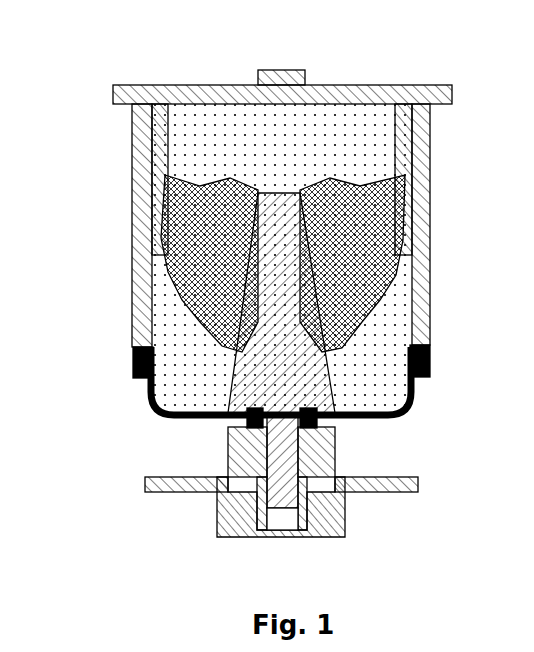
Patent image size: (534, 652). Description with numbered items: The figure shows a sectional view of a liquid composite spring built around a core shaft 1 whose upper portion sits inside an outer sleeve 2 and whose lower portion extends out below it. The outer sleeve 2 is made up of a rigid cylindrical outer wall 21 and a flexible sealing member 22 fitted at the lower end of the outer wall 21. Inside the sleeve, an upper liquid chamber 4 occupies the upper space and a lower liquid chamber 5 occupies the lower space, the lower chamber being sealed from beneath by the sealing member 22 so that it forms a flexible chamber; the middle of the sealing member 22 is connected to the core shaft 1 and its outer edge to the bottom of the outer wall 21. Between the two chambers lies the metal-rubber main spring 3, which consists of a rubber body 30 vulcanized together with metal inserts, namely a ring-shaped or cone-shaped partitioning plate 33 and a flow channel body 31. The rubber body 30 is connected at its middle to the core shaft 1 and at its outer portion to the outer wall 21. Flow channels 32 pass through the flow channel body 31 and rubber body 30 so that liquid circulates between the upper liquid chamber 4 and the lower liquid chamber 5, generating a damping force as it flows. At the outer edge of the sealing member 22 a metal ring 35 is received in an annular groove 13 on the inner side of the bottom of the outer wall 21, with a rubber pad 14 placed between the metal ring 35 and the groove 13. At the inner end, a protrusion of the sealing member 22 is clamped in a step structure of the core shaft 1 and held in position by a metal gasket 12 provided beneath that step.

The core shaft 1 is at (148, 160).
The outer sleeve 2 is at (153, 133).
The metal-rubber main spring 3 is at (187, 260).
The upper liquid chamber 4 is at (317, 113).
The lower liquid chamber 5 is at (388, 378).
The metal gasket 12 is at (347, 490).
The groove 13 is at (133, 377).
The rubber pad 14 is at (422, 377).
The outer wall 21 is at (417, 298).
The sealing member 22 is at (167, 417).
The rubber body 30 is at (395, 170).
The flow channel body 31 is at (153, 230).
The flow channel 32 is at (403, 220).
The partitioning plate 33 is at (152, 265).
The metal ring 35 is at (413, 343).